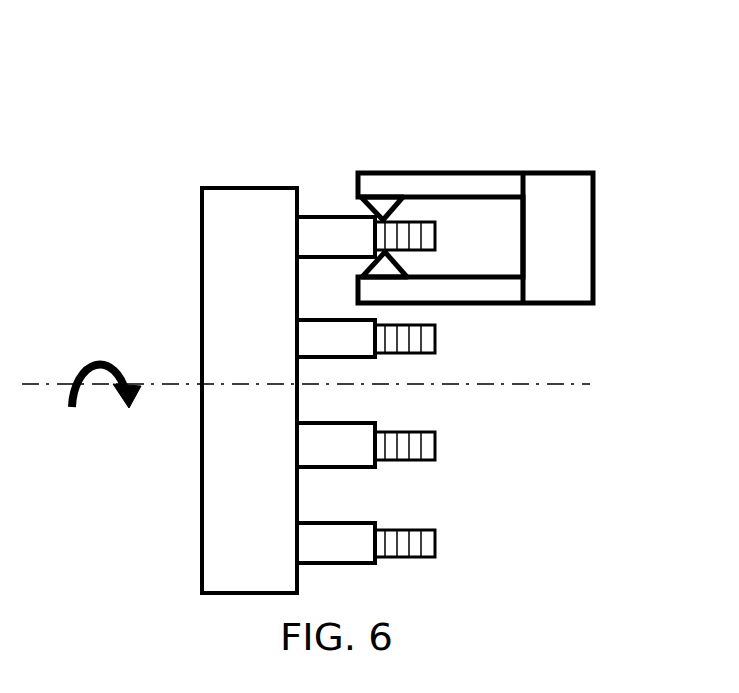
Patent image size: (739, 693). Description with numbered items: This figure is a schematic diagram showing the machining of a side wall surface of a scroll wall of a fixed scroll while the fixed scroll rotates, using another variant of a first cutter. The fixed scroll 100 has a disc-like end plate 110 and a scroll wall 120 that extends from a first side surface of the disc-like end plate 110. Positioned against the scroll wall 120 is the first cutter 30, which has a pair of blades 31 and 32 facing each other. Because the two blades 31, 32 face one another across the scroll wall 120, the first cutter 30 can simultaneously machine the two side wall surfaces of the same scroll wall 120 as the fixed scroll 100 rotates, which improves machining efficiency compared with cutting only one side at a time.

The fixed scroll 100 is at (246, 357).
The disc-like end plate 110 is at (227, 305).
The scroll wall 120 is at (333, 232).
The first cutter 30 is at (505, 223).
The blade 31 is at (383, 203).
The blade 32 is at (386, 268).